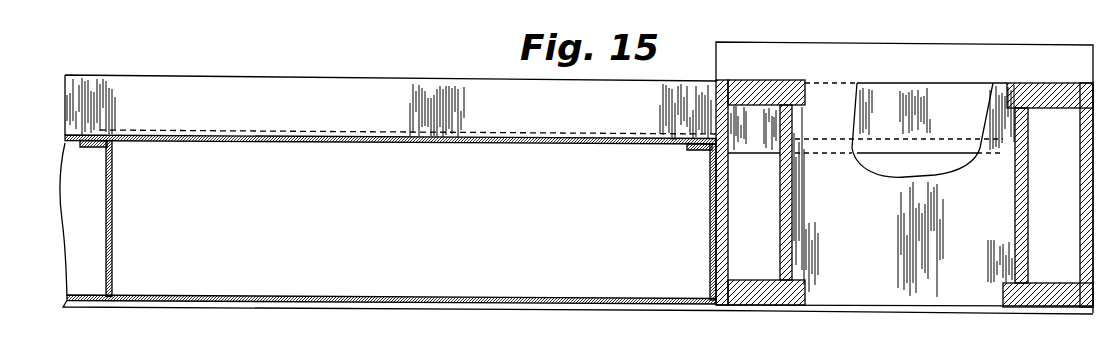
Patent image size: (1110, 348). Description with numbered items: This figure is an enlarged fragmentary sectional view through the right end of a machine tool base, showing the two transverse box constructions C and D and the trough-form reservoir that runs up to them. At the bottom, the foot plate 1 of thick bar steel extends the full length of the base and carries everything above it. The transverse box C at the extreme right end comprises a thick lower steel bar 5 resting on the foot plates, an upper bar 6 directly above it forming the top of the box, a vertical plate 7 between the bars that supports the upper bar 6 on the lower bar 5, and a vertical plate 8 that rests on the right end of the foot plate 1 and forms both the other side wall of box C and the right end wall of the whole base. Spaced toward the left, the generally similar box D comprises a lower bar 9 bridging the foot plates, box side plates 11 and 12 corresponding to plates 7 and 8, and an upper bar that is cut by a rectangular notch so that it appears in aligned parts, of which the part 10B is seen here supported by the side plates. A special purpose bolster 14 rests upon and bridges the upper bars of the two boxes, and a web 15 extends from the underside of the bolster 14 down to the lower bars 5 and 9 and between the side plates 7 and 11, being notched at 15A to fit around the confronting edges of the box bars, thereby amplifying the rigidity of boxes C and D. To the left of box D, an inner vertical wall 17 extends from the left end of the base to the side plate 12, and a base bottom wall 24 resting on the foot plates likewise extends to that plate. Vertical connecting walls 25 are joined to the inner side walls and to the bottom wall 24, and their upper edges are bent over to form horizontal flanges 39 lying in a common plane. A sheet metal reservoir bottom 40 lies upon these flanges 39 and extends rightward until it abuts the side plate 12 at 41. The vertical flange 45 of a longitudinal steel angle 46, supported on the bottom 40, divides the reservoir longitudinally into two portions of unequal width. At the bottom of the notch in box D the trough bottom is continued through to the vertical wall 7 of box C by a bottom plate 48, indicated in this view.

The foot plate 1 is at (848, 308).
The lower steel bar 5 is at (1050, 297).
The upper bar 6 is at (1060, 104).
The vertical plate 7 is at (1028, 226).
The vertical plate 8 is at (1082, 245).
The lower bar 9 is at (753, 295).
The upper bar part 10B is at (790, 95).
The box side plate 11 is at (792, 180).
The box side plate 12 is at (715, 196).
The bolster 14 is at (945, 50).
The web 15 is at (884, 222).
The notch 15A is at (800, 110).
The inner vertical wall 17 is at (480, 209).
The base bottom wall 24 is at (458, 297).
The vertical connecting wall 25 is at (113, 205).
The horizontal flange 39 is at (95, 147).
The reservoir bottom 40 is at (310, 142).
The abutment 41 is at (742, 154).
The vertical flange 45 is at (362, 90).
The longitudinal steel angle 46 is at (66, 121).
The bottom plate 48 is at (767, 155).
The transverse box structure C is at (1040, 198).
The transverse box structure D is at (775, 212).